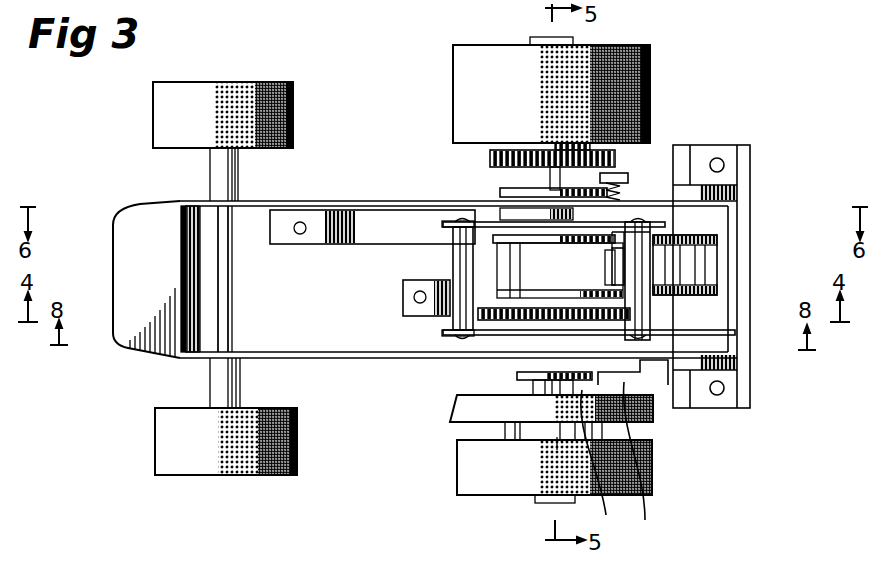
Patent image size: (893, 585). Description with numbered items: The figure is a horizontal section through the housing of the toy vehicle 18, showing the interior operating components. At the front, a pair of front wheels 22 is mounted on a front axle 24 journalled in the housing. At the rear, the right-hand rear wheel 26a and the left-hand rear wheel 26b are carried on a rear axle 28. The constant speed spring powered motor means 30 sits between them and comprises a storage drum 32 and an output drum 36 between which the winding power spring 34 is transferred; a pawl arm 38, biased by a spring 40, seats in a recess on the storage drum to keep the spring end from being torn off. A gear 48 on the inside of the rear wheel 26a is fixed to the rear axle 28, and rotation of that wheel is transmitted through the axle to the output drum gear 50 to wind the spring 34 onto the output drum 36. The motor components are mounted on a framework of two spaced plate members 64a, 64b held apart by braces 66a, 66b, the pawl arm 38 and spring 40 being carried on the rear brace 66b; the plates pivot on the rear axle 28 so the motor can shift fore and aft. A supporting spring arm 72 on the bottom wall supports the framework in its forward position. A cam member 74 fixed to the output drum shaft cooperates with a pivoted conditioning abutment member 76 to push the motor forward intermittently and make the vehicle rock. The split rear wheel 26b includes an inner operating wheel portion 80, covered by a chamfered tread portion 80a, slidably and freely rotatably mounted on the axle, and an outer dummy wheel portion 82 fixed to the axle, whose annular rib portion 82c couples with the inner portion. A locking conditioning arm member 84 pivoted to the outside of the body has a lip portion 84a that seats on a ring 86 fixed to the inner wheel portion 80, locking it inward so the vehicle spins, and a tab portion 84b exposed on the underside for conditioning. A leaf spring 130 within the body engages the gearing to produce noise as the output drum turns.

The toy vehicle 18 is at (150, 380).
The front wheels 22 is at (153, 121).
The front axle 24 is at (226, 240).
The right-hand rear wheel 26a is at (660, 55).
The left-hand rear wheel 26b is at (669, 434).
The rear axle 28 is at (548, 178).
The spring powered motor means 30 is at (673, 266).
The storage drum 32 is at (717, 238).
The winding power spring 34 is at (717, 288).
The output drum 36 is at (497, 243).
The pawl arm 38 is at (612, 256).
The biasing spring 40 is at (628, 242).
The rear wheel gear 48 is at (489, 158).
The output drum gear 50 is at (478, 314).
The plate member 64a is at (715, 332).
The plate member 64b is at (715, 220).
The brace 66a is at (452, 258).
The rear brace 66b is at (650, 318).
The supporting spring arm 72 is at (385, 228).
The cam member 74 is at (533, 235).
The conditioning abutment member 76 is at (630, 206).
The inner operating wheel portion 80 is at (446, 425).
The tread portion 80a is at (456, 406).
The outer dummy wheel portion 82 is at (662, 487).
The annular rib portion 82c is at (557, 440).
The locking conditioning arm member 84 is at (643, 462).
The lip portion 84a is at (607, 461).
The tab portion 84b is at (670, 370).
The ring 86 is at (516, 376).
The leaf spring 130 is at (402, 300).